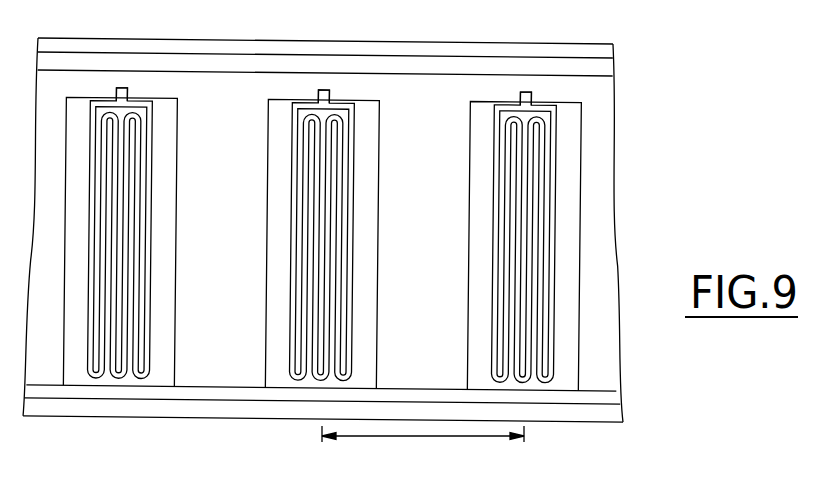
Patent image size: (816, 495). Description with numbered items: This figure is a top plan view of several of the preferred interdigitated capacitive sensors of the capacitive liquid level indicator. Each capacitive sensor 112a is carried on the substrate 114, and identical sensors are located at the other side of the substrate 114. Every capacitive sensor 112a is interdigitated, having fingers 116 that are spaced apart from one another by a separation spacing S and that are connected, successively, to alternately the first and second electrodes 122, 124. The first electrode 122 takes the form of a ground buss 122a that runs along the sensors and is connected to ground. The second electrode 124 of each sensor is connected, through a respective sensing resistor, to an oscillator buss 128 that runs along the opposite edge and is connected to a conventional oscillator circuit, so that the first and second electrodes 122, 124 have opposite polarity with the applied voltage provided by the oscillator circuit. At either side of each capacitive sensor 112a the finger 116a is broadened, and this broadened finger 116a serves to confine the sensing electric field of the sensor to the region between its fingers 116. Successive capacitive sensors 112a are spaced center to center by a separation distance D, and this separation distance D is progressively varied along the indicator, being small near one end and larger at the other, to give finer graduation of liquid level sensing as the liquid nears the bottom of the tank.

The capacitive sensor 112a is at (612, 103).
The substrate 114 is at (97, 418).
The fingers 116 is at (490, 245).
The broadened finger 116a is at (483, 327).
The first electrode 122 is at (283, 392).
The ground buss 122a is at (192, 393).
The second electrode 124 is at (122, 88).
The oscillator buss 128 is at (357, 65).
The separation spacing S is at (517, 156).
The separation distance D is at (428, 437).